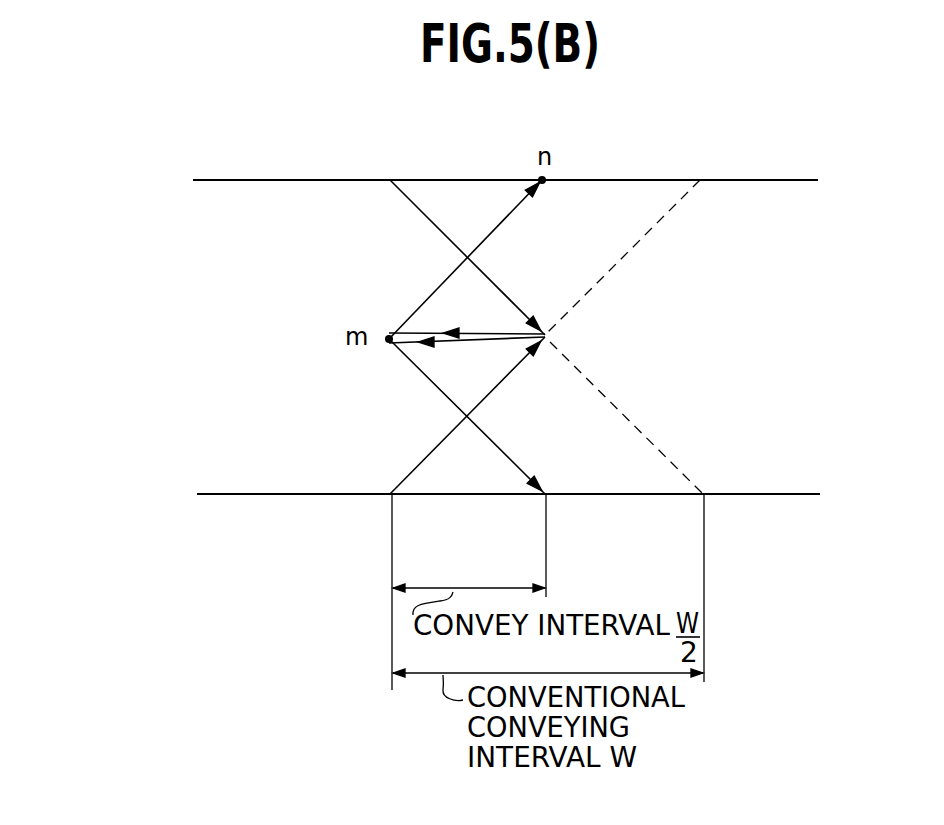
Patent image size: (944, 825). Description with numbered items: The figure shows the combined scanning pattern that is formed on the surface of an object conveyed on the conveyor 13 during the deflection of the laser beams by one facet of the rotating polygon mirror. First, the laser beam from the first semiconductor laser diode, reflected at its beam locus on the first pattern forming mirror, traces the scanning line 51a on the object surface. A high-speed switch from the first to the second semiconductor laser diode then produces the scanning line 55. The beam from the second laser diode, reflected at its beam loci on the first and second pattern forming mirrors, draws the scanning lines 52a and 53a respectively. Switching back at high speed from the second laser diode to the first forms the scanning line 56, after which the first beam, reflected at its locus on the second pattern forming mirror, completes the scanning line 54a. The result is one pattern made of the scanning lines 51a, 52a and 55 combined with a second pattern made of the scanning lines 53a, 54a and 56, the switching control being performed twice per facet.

The conveyor 13 is at (295, 180).
The scanning line 51a is at (420, 462).
The scanning line 52a is at (500, 220).
The scanning line 53a is at (420, 210).
The scanning line 54a is at (433, 383).
The scanning line 55 is at (487, 343).
The scanning line 56 is at (473, 332).